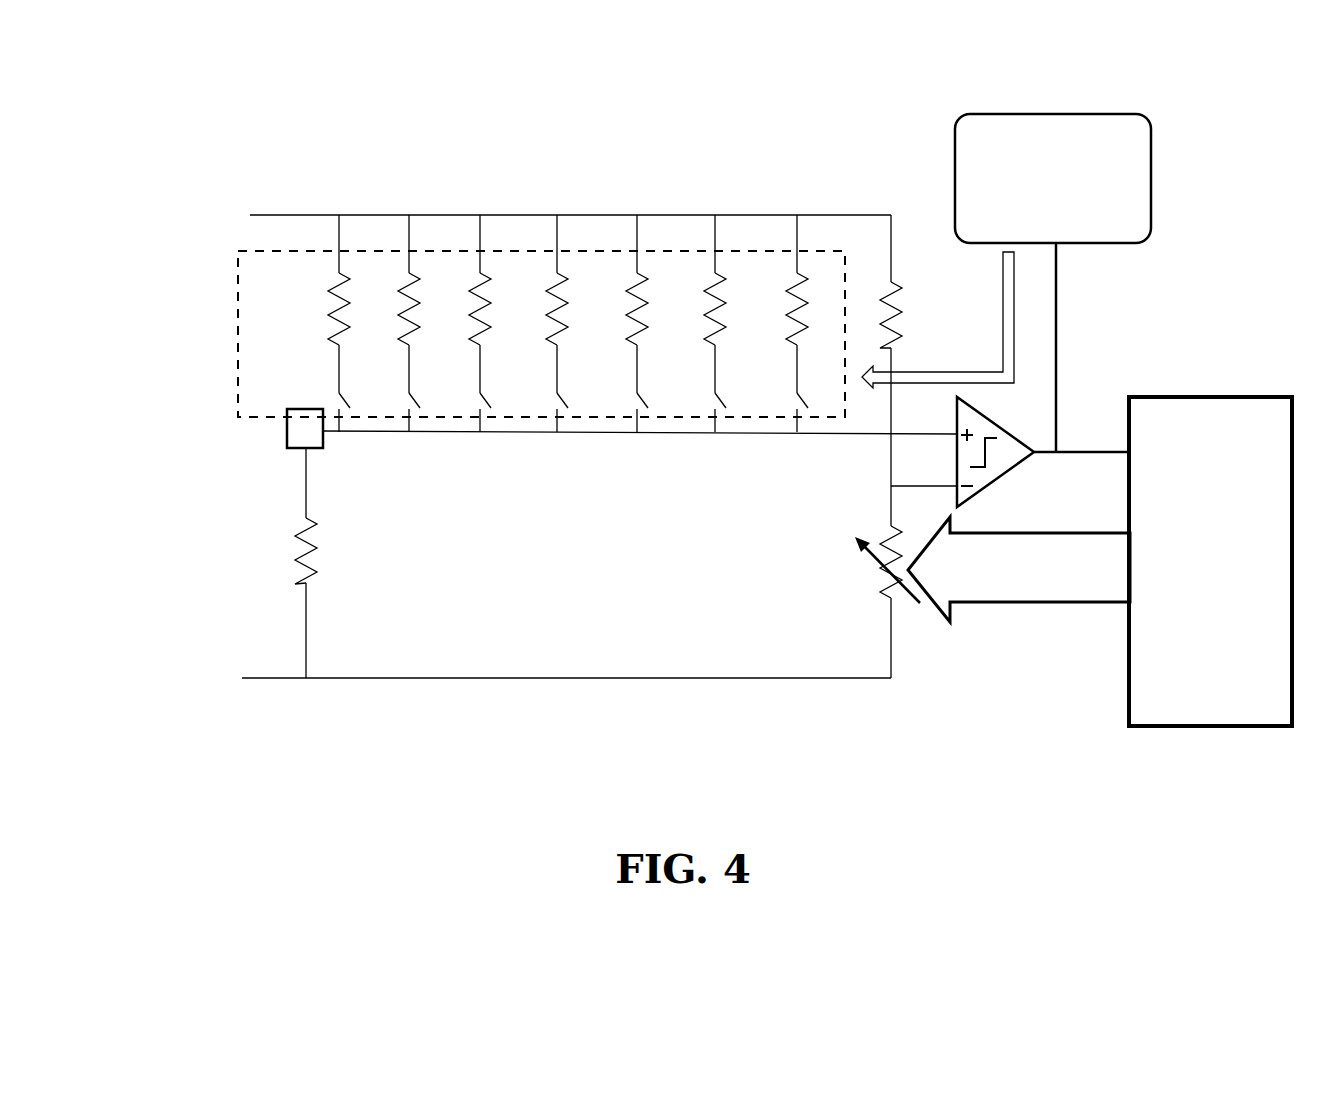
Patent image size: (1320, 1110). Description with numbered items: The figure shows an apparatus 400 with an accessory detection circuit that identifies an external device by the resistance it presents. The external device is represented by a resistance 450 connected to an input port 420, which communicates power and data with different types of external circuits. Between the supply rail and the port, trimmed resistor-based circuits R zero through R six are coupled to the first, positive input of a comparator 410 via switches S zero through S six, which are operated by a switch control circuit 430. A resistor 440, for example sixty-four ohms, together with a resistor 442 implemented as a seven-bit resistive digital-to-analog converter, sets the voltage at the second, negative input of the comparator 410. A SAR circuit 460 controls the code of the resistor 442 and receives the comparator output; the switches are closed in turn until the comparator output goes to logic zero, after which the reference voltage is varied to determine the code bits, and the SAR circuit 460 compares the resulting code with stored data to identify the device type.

The apparatus 400 is at (1187, 74).
The comparator 410 is at (980, 415).
The input port 420 is at (305, 409).
The switch control circuit 430 is at (1117, 114).
The resistor 440 is at (891, 282).
The resistor (resistive DAC) 442 is at (891, 528).
The external device resistance 450 is at (306, 520).
The SAR circuit 460 is at (1168, 397).